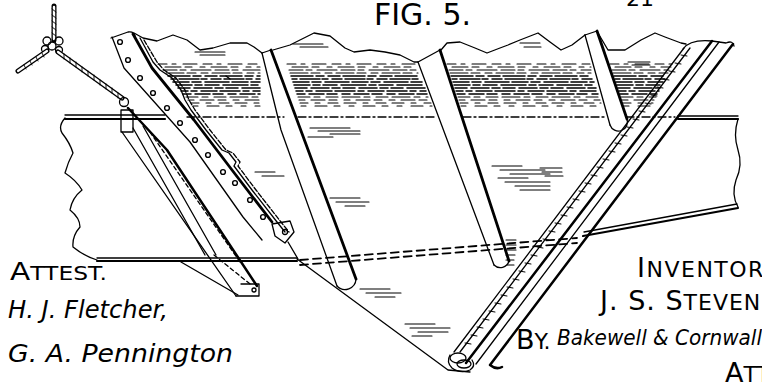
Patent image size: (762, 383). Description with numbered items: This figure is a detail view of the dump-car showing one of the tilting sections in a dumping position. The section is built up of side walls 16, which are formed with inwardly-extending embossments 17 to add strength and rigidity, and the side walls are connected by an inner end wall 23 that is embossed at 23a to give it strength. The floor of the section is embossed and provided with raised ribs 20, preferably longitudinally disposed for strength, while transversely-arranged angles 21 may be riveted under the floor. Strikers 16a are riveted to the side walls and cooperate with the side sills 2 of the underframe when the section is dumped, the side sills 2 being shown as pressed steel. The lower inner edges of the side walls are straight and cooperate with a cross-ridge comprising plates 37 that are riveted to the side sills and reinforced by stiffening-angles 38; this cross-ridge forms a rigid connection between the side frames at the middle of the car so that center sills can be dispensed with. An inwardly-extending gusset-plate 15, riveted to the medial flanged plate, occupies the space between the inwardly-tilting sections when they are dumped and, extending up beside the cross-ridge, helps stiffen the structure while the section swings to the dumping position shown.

The side sill 2 is at (661, 176).
The gusset-plate 15 is at (58, 18).
The side wall 16 is at (410, 202).
The striker 16a is at (228, 78).
The embossment 17 is at (309, 166).
The raised rib 20 is at (596, 189).
The transversely-arranged angle 21 is at (482, 363).
The inner end wall 23 is at (133, 34).
The embossment of inner end wall 23a is at (173, 70).
The plate of cross-ridge 37 is at (172, 165).
The stiffening-angle 38 is at (188, 208).